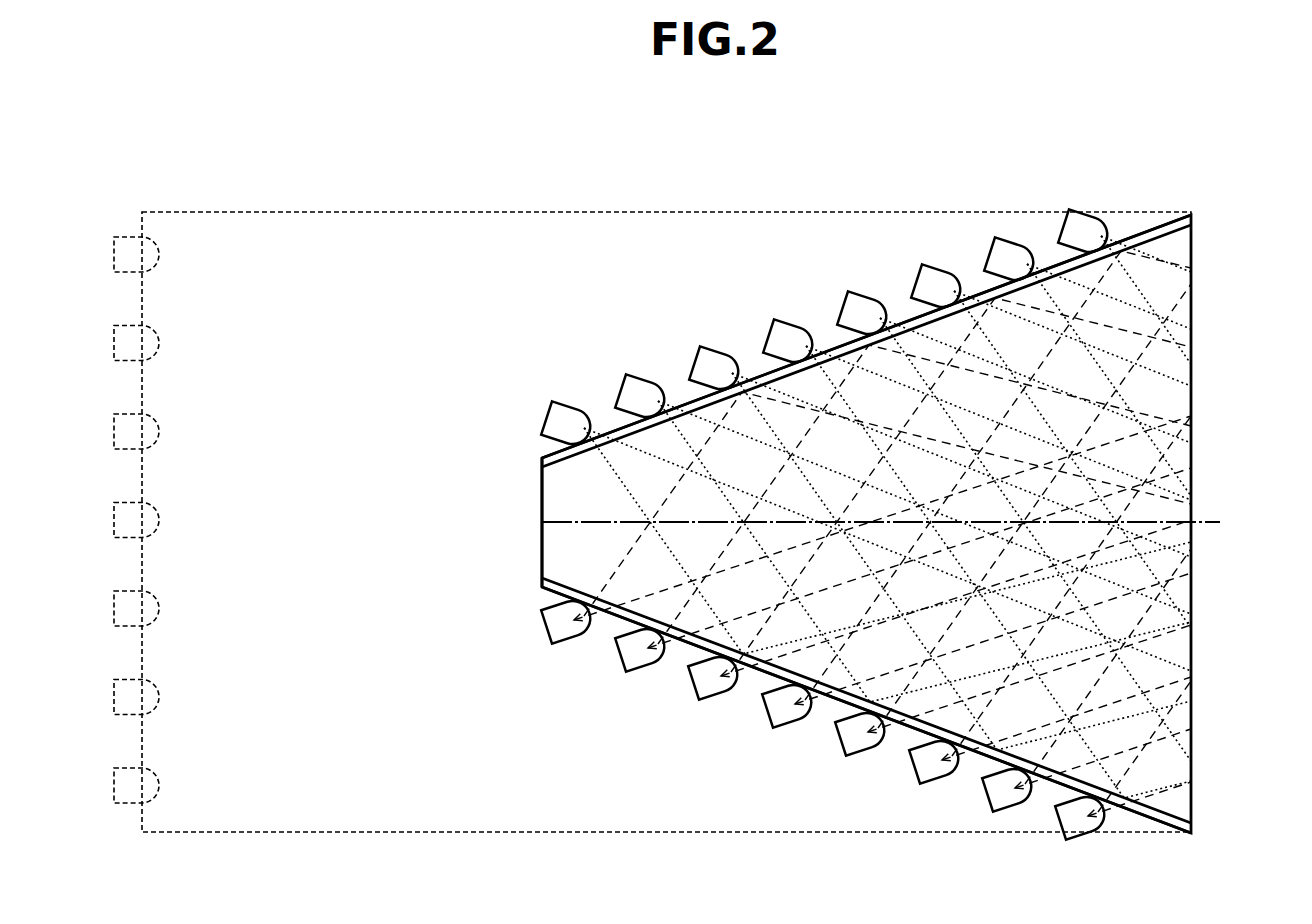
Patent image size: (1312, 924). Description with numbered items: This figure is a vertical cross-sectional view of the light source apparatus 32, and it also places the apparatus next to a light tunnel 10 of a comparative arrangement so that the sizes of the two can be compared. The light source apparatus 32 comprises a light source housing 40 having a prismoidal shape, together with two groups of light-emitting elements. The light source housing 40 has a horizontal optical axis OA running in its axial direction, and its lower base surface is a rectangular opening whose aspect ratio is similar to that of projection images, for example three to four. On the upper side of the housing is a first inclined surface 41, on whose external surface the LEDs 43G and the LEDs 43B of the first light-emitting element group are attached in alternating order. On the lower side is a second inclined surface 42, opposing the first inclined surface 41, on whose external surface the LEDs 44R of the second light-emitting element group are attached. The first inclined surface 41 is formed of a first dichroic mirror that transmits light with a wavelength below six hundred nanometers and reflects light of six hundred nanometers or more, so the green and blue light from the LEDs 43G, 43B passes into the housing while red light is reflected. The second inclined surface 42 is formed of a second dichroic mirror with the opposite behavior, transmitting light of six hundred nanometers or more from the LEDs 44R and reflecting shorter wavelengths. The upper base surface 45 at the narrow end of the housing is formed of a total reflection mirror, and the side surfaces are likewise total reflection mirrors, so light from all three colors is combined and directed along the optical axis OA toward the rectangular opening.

The light tunnel 10 is at (534, 212).
The light source apparatus 32 is at (1234, 197).
The light source housing 40 is at (1192, 281).
The first inclined surface 41 is at (1158, 230).
The second inclined surface 42 is at (1150, 816).
The upper base surface 45 is at (542, 543).
The optical axis OA is at (904, 526).
The LEDs (green) 43G is at (565, 406).
The LEDs (blue) 43B is at (639, 379).
The LEDs (red) 44R is at (1064, 836).